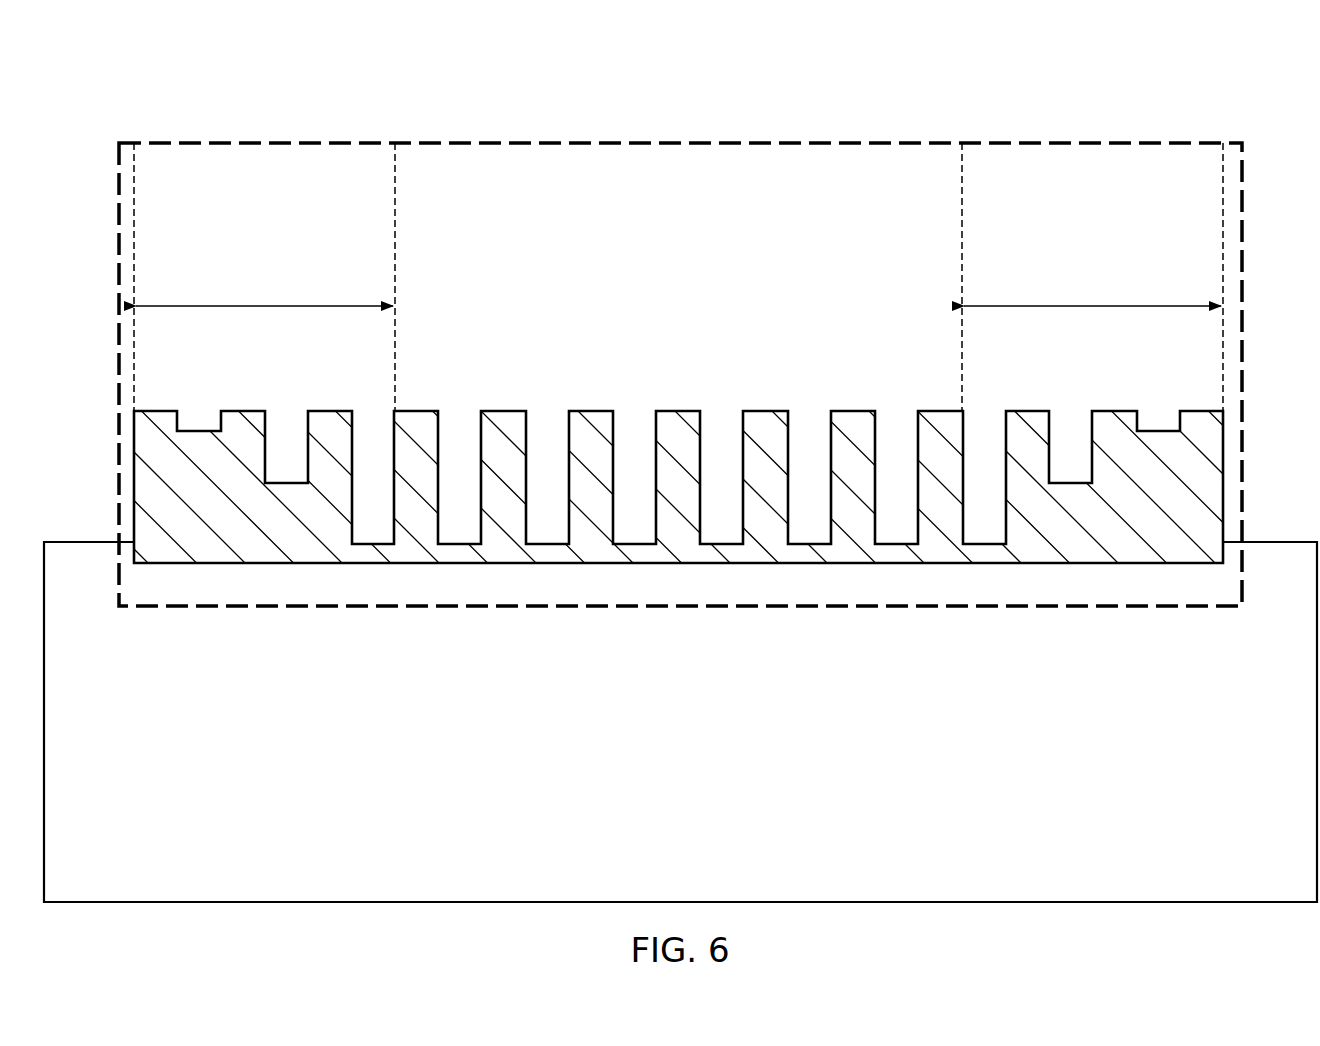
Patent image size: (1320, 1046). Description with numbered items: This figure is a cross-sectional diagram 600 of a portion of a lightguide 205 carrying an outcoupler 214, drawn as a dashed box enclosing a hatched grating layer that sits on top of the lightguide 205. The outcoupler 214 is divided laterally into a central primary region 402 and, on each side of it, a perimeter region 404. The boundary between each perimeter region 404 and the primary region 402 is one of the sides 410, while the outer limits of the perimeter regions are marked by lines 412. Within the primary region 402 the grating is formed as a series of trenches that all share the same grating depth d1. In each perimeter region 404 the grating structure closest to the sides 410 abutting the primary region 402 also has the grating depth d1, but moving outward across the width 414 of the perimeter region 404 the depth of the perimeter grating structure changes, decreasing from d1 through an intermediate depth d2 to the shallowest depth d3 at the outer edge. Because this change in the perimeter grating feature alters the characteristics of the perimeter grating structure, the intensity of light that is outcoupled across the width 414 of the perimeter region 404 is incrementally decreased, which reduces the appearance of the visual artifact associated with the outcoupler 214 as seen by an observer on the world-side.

The cross-sectional diagram 600 is at (68, 100).
The outcoupler 214 is at (779, 141).
The lightguide 205 is at (659, 770).
The primary region 402 is at (657, 252).
The perimeter region 404 is at (242, 195).
The sides 410 is at (395, 228).
The outer edge of edge region 412 is at (134, 228).
The width of the perimeter region 414 is at (266, 304).
The grating depth d1 is at (380, 542).
The second trench depth d2 is at (293, 481).
The grating depth d3 is at (198, 480).